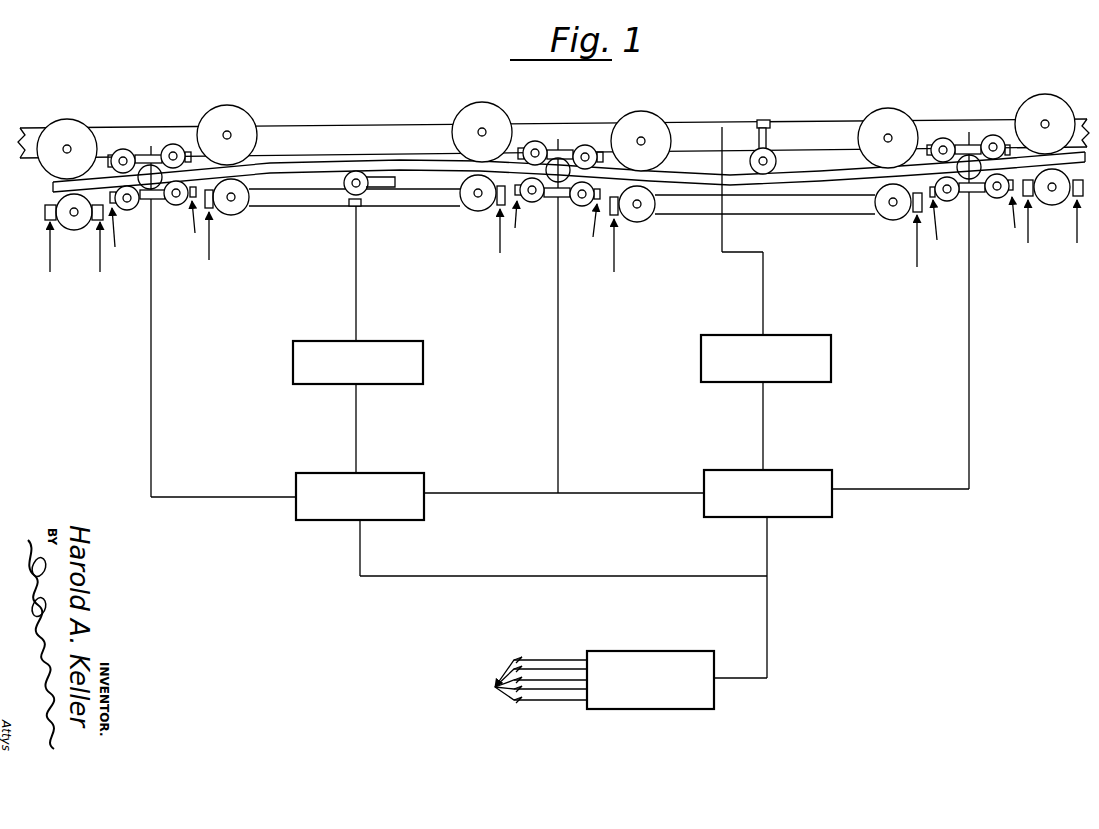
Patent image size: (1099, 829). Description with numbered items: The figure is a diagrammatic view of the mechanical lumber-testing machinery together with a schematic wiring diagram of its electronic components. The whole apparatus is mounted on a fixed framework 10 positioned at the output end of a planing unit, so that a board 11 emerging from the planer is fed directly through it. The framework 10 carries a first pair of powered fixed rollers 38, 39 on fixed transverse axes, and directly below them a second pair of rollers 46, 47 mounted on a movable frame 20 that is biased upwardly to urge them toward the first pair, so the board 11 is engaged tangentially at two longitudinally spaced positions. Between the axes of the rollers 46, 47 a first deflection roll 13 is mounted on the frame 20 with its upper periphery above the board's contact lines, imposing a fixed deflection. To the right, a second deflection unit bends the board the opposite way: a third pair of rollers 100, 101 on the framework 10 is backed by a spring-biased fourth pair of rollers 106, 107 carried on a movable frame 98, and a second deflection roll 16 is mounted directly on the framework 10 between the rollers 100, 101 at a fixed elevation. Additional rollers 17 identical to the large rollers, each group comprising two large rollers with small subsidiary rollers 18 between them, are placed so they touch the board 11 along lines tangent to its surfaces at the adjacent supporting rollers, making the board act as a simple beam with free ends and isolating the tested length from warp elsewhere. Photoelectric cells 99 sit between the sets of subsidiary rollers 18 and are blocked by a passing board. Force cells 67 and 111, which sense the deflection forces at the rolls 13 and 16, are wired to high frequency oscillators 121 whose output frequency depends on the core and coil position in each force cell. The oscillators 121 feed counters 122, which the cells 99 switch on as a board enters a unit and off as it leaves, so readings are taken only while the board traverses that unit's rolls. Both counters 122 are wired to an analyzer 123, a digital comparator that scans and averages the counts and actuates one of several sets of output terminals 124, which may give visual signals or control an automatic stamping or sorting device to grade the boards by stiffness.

The fixed framework 10 is at (370, 126).
The board 11 is at (52, 188).
The first deflection roll 13 is at (340, 182).
The second deflection roll 16 is at (771, 149).
The additional rollers 17 is at (76, 131).
The subsidiary rollers 18 is at (167, 148).
The movable frame 20 is at (323, 208).
The fixed roller 38 is at (247, 121).
The fixed roller 39 is at (484, 104).
The roller 46 is at (242, 213).
The roller 47 is at (485, 210).
The force cell 67 is at (362, 209).
The movable frame 98 is at (822, 216).
The photoelectric cell 99 is at (153, 189).
The roller 100 is at (660, 110).
The roller 101 is at (892, 115).
The roller 106 is at (647, 218).
The roller 107 is at (893, 215).
The force cell 111 is at (764, 119).
The high frequency oscillator 121 is at (400, 346).
The counter 122 is at (397, 468).
The analyzer 123 is at (666, 653).
The output terminals 124 is at (521, 680).